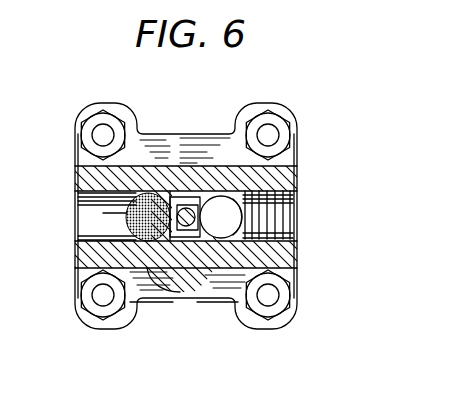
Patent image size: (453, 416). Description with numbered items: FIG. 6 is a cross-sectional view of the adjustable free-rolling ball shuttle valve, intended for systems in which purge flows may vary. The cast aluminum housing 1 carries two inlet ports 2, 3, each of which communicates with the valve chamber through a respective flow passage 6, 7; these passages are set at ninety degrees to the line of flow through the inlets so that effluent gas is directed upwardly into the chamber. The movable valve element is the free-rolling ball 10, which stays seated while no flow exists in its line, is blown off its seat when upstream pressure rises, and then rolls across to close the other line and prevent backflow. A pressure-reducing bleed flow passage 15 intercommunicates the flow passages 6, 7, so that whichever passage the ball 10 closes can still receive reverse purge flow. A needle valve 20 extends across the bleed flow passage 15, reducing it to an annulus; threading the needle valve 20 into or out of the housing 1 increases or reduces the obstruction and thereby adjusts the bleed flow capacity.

The housing 1 is at (80, 172).
The inlet port 2 is at (82, 212).
The inlet port 3 is at (284, 212).
The flow passage 6 is at (152, 195).
The flow passage 7 is at (213, 233).
The free-rolling ball 10 is at (137, 203).
The bleed flow passage 15 is at (180, 232).
The needle valve 20 is at (188, 205).